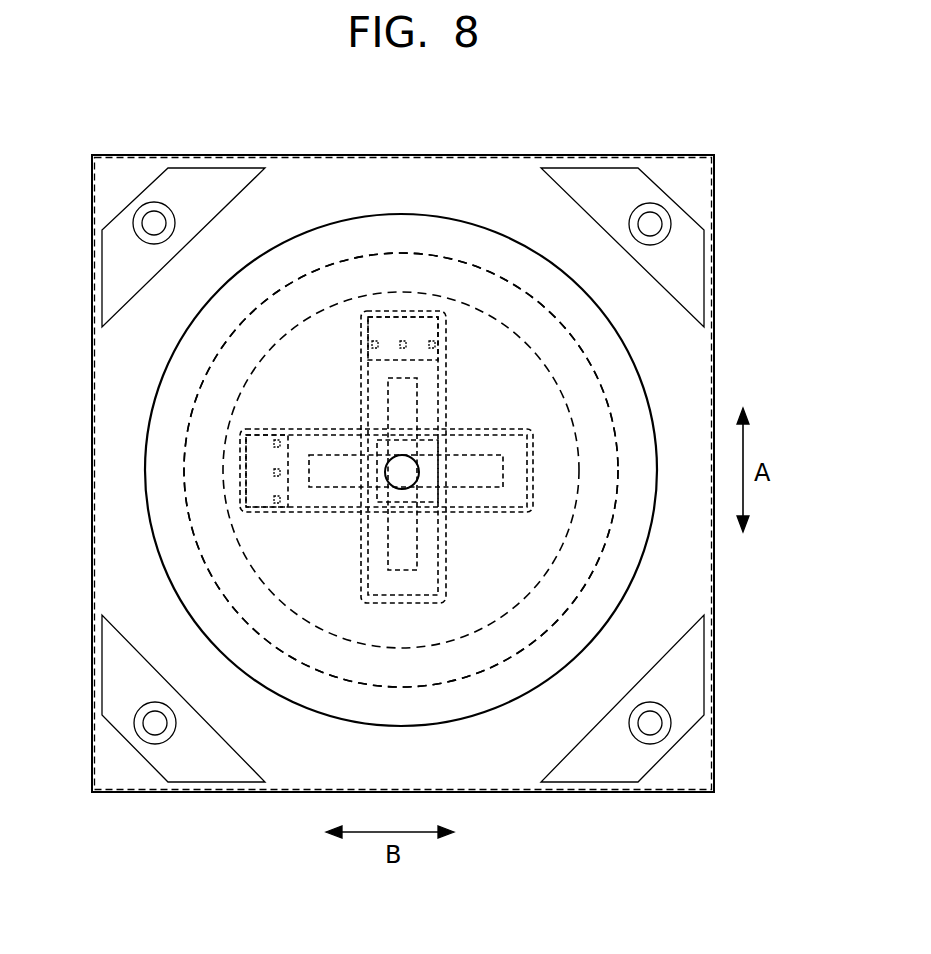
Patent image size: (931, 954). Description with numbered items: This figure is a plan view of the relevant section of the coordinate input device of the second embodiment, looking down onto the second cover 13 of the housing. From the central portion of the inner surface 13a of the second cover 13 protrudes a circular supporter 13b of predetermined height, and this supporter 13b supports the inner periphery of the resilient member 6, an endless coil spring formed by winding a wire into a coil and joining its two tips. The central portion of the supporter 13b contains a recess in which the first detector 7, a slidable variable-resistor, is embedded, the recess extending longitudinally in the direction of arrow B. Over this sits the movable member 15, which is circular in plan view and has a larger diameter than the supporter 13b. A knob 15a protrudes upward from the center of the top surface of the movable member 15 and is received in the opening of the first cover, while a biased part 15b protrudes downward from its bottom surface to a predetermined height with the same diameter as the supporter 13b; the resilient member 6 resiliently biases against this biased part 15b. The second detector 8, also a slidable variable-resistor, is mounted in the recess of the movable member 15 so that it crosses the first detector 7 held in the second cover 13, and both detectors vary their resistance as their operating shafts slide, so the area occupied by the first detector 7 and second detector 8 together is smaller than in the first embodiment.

The resilient member 6 is at (205, 483).
The first detector 7 is at (311, 428).
The second detector 8 is at (387, 345).
The second cover 13 is at (722, 630).
The inner surface 13a is at (678, 563).
The supporter 13b is at (480, 582).
The movable member 15 is at (430, 233).
The knob 15a is at (402, 462).
The biased part 15b is at (401, 554).